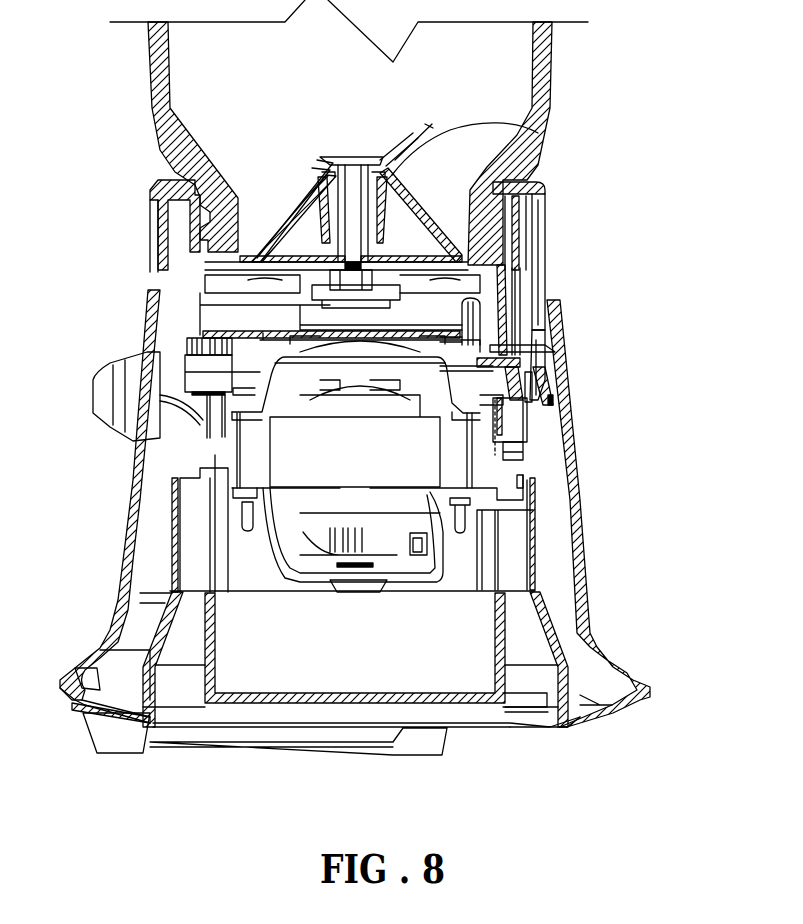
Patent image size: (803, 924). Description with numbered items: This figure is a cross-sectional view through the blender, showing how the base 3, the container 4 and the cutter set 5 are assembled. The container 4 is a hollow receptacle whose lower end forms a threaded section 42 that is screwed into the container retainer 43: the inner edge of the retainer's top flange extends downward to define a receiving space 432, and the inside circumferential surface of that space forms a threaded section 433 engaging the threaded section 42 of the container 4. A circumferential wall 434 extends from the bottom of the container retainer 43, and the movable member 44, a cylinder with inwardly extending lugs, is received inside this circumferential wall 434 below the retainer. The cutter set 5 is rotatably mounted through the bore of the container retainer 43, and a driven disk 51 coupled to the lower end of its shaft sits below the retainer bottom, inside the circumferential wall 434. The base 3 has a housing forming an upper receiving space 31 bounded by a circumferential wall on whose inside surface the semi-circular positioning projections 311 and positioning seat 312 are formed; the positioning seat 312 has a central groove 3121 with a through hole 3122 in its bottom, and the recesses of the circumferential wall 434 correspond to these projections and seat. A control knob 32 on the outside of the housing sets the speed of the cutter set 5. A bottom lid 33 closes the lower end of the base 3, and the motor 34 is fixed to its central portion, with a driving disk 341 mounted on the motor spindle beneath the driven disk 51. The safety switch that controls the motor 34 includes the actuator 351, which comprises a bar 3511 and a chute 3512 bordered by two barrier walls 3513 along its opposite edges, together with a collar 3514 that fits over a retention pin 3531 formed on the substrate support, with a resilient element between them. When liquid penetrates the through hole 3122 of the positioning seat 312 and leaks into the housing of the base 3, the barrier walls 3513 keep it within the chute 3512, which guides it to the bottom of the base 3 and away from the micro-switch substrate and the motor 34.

The base 3 is at (573, 463).
The container 4 is at (555, 71).
The cutter set 5 is at (538, 133).
The upper receiving space 31 is at (540, 273).
The control knob 32 is at (127, 427).
The bottom lid 33 is at (607, 722).
The motor 34 is at (283, 447).
The threaded section 42 is at (545, 215).
The container retainer 43 is at (548, 183).
The movable member 44 is at (300, 298).
The driven disk 51 is at (207, 273).
The positioning projections 311 is at (205, 307).
The positioning seat 312 is at (540, 310).
The driving disk 341 is at (190, 332).
The actuator 351 is at (653, 368).
The receiving space 432 is at (182, 207).
The threaded section 433 is at (520, 228).
The circumferential wall 434 is at (512, 318).
The central groove 3121 is at (540, 347).
The through hole 3122 is at (540, 357).
The bar 3511 is at (540, 373).
The chute 3512 is at (540, 435).
The barrier walls 3513 is at (540, 382).
The collar 3514 is at (540, 423).
The retention pin 3531 is at (540, 460).